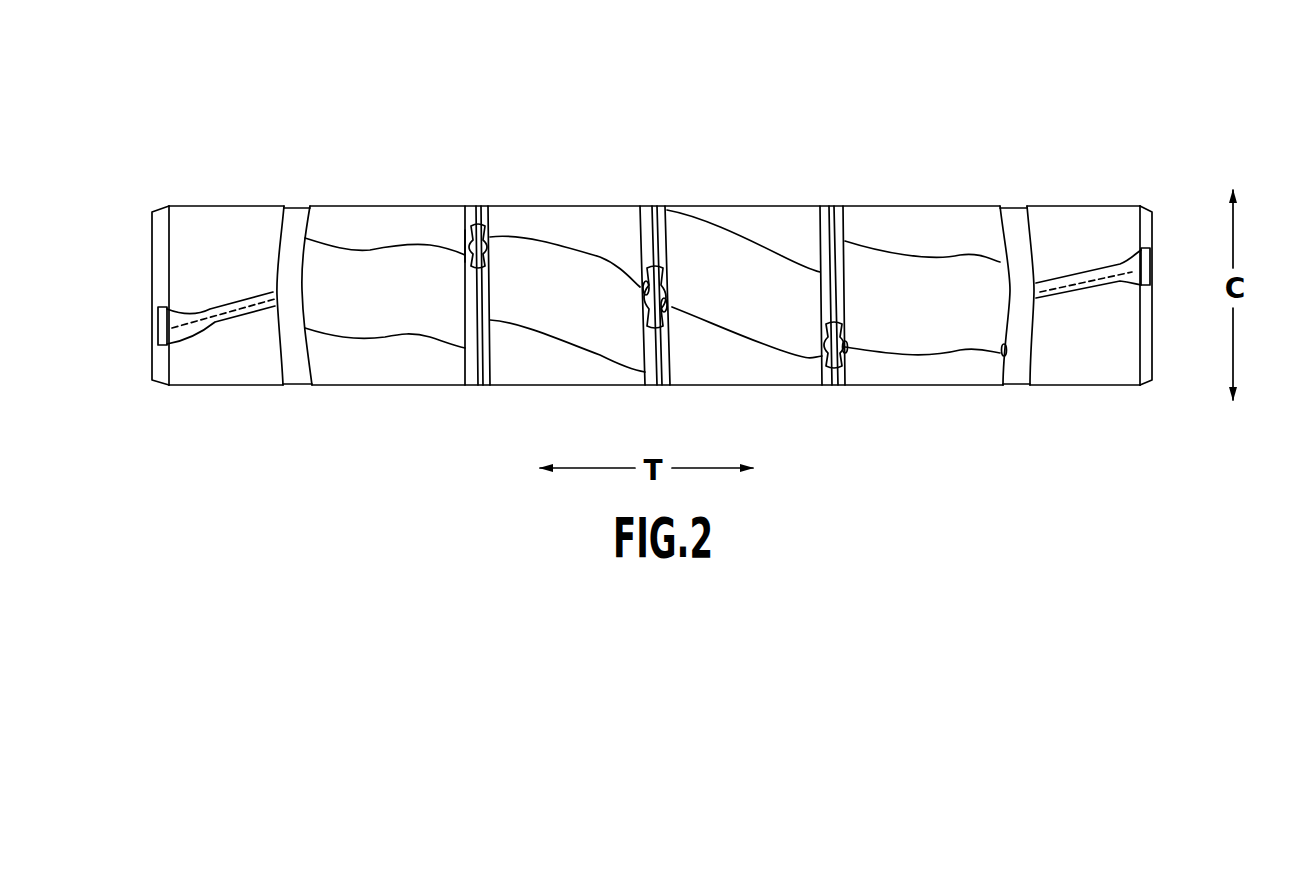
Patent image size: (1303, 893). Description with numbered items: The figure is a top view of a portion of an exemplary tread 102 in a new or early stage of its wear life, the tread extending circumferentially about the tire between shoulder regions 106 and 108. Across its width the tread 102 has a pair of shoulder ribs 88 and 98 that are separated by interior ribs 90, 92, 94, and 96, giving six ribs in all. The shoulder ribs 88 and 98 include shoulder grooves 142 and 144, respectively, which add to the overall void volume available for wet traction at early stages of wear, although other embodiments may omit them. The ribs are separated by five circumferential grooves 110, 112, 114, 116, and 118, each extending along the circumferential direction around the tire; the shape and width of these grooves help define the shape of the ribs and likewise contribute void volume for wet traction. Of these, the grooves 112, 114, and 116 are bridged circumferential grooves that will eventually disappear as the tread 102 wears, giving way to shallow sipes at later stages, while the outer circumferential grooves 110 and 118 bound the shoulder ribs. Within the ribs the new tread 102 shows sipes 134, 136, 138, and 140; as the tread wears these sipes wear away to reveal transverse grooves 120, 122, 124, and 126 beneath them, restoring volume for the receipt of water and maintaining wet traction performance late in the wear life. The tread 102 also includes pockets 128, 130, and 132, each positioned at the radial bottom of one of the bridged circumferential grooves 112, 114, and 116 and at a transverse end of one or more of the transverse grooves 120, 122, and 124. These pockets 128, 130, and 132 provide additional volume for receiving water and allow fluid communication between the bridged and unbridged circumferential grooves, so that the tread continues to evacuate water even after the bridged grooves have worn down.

The tread 102 is at (170, 155).
The shoulder region 106 is at (142, 390).
The shoulder region 108 is at (1153, 393).
The shoulder rib 88 is at (216, 386).
The interior rib 90 is at (392, 386).
The interior rib 92 is at (553, 386).
The interior rib 94 is at (750, 386).
The interior rib 96 is at (927, 386).
The shoulder rib 98 is at (1078, 386).
The circumferential groove 110 is at (297, 393).
The bridged circumferential groove 112 is at (480, 200).
The bridged circumferential groove 114 is at (655, 200).
The bridged circumferential groove 116 is at (834, 198).
The circumferential groove 118 is at (1012, 393).
The transverse groove 120 is at (304, 242).
The transverse groove 122 is at (491, 233).
The transverse groove 124 is at (672, 304).
The transverse groove 126 is at (853, 337).
The pocket 128 is at (461, 238).
The pocket 130 is at (671, 280).
The pocket 132 is at (850, 350).
The sipe 134 is at (378, 246).
The sipe 136 is at (556, 245).
The sipe 138 is at (744, 331).
The sipe 140 is at (923, 342).
The shoulder groove 142 is at (202, 313).
The shoulder groove 144 is at (1112, 268).